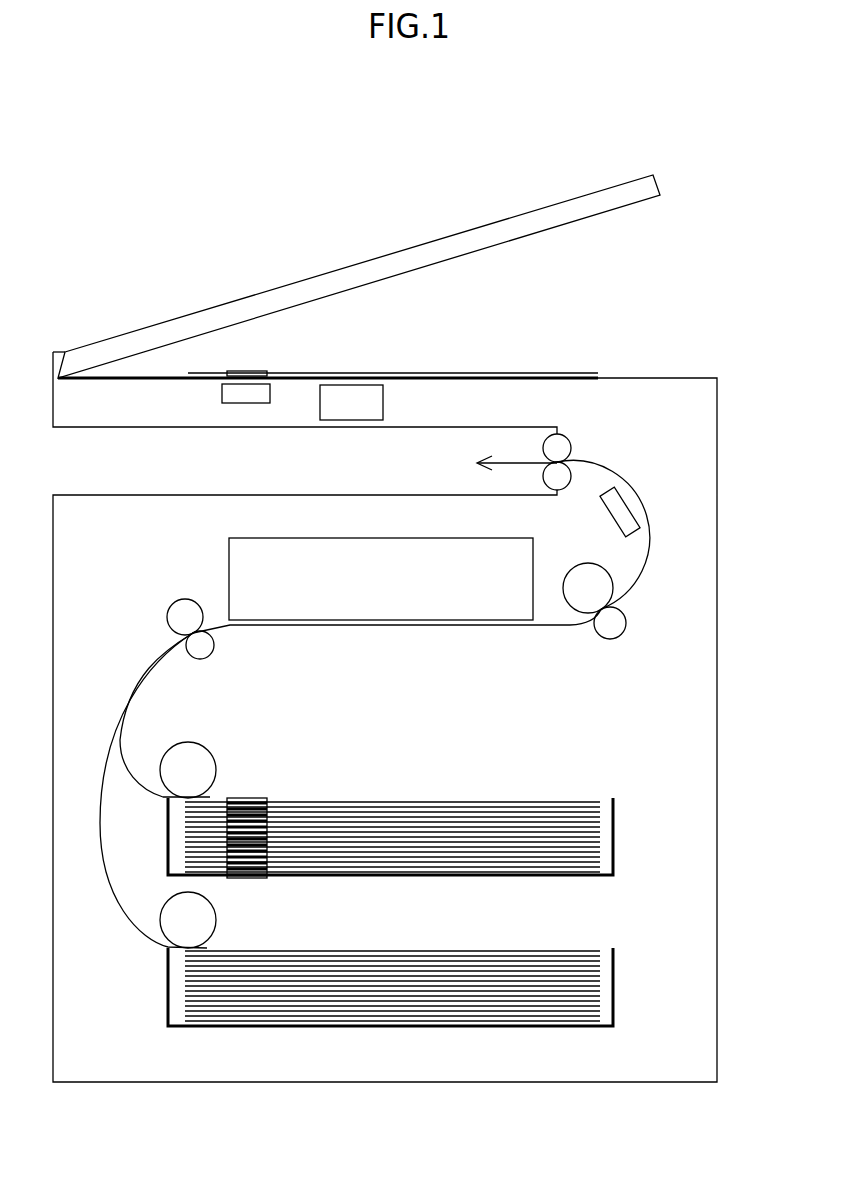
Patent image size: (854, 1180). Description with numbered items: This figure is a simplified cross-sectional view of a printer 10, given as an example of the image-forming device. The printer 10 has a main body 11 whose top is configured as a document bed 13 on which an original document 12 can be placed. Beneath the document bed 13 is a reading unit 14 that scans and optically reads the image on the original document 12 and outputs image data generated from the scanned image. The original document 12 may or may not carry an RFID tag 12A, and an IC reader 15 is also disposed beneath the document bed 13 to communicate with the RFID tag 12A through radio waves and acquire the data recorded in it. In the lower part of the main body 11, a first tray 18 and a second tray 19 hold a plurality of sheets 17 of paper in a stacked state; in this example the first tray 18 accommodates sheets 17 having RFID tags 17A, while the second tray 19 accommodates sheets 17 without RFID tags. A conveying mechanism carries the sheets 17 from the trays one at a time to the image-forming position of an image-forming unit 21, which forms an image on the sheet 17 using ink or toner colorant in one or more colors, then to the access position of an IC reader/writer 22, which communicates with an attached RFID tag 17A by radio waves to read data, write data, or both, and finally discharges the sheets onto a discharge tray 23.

The printer 10 is at (255, 176).
The main body 11 is at (717, 704).
The original document 12 is at (507, 375).
The RFID tag 12A is at (247, 372).
The document bed 13 is at (620, 378).
The reading unit 14 is at (353, 413).
The IC reader 15 is at (248, 397).
The sheets 17 is at (378, 802).
The RFID tag 17A is at (245, 798).
The first tray 18 is at (616, 833).
The second tray 19 is at (616, 977).
The image-forming unit 21 is at (398, 608).
The IC reader/writer 22 is at (617, 517).
The discharge tray 23 is at (122, 495).